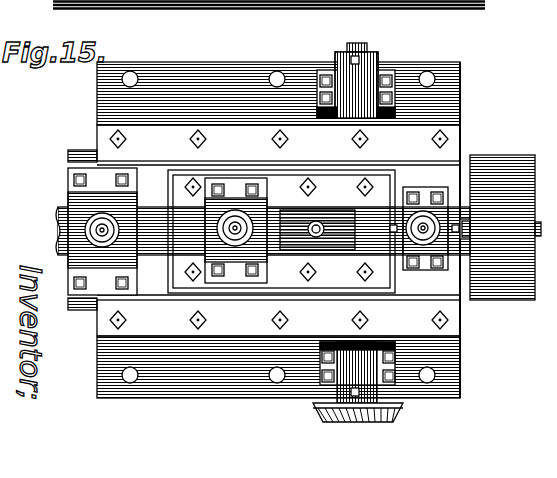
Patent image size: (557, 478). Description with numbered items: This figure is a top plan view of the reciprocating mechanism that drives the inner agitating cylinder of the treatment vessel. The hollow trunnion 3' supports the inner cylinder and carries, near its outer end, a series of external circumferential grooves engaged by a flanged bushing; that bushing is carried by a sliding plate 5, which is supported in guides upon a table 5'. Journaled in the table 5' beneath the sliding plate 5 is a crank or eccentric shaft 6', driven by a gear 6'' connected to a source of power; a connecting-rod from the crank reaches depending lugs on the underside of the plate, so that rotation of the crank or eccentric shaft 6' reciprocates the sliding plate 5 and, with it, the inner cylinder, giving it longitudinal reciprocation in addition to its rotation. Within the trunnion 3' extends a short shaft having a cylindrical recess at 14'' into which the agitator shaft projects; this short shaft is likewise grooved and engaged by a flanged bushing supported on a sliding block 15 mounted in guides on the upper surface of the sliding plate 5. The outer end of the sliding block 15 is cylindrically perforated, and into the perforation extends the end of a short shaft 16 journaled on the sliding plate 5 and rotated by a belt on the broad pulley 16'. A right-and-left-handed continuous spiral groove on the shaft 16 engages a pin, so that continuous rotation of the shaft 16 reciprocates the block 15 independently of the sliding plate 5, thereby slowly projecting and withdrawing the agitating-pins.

The hollow trunnion 3' is at (113, 230).
The sliding plate 5 is at (424, 216).
The table 5' is at (295, 230).
The crank or eccentric shaft 6' is at (357, 223).
The gear 6'' is at (344, 419).
The cylindrical recess 14'' is at (298, 254).
The sliding block 15 is at (271, 214).
The short shaft 16 is at (281, 231).
The broad pulley 16' is at (502, 227).